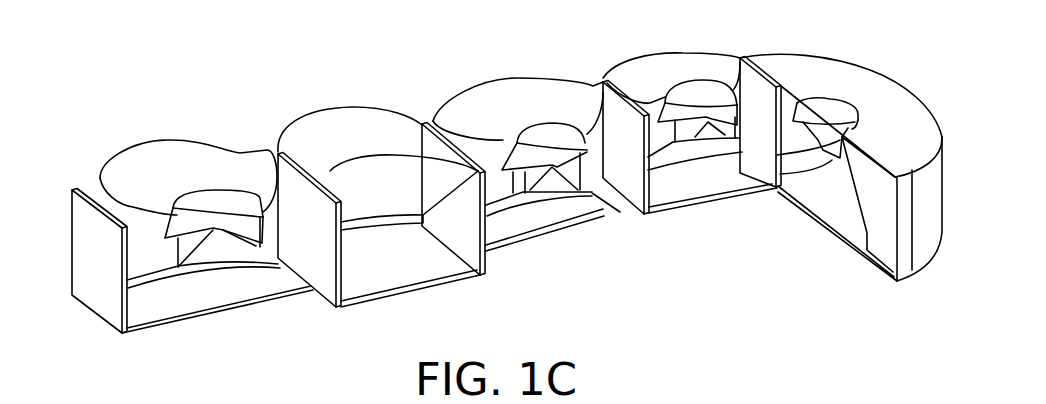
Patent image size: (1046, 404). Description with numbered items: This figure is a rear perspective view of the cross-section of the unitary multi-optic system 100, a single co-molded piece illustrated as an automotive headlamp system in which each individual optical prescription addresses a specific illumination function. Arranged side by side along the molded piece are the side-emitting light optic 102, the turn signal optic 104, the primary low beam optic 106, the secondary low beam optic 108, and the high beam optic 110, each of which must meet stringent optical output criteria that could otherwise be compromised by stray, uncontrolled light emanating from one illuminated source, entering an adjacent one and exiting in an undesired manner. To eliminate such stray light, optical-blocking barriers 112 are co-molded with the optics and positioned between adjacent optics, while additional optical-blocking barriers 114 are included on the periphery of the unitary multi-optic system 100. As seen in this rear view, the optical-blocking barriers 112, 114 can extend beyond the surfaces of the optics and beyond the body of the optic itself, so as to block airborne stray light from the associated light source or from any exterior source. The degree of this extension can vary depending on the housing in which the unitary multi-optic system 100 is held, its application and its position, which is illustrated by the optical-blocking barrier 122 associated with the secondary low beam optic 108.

The unitary multi-optic system 100 is at (121, 112).
The side-emitting light optic 102 is at (832, 73).
The turn signal optic 104 is at (670, 68).
The primary low beam optic 106 is at (513, 93).
The secondary low beam optic 108 is at (355, 118).
The high beam optic 110 is at (180, 140).
The optical-blocking barrier 112 is at (290, 180).
The optical-blocking barrier 114 is at (93, 287).
The optical-blocking barrier 122 is at (393, 270).